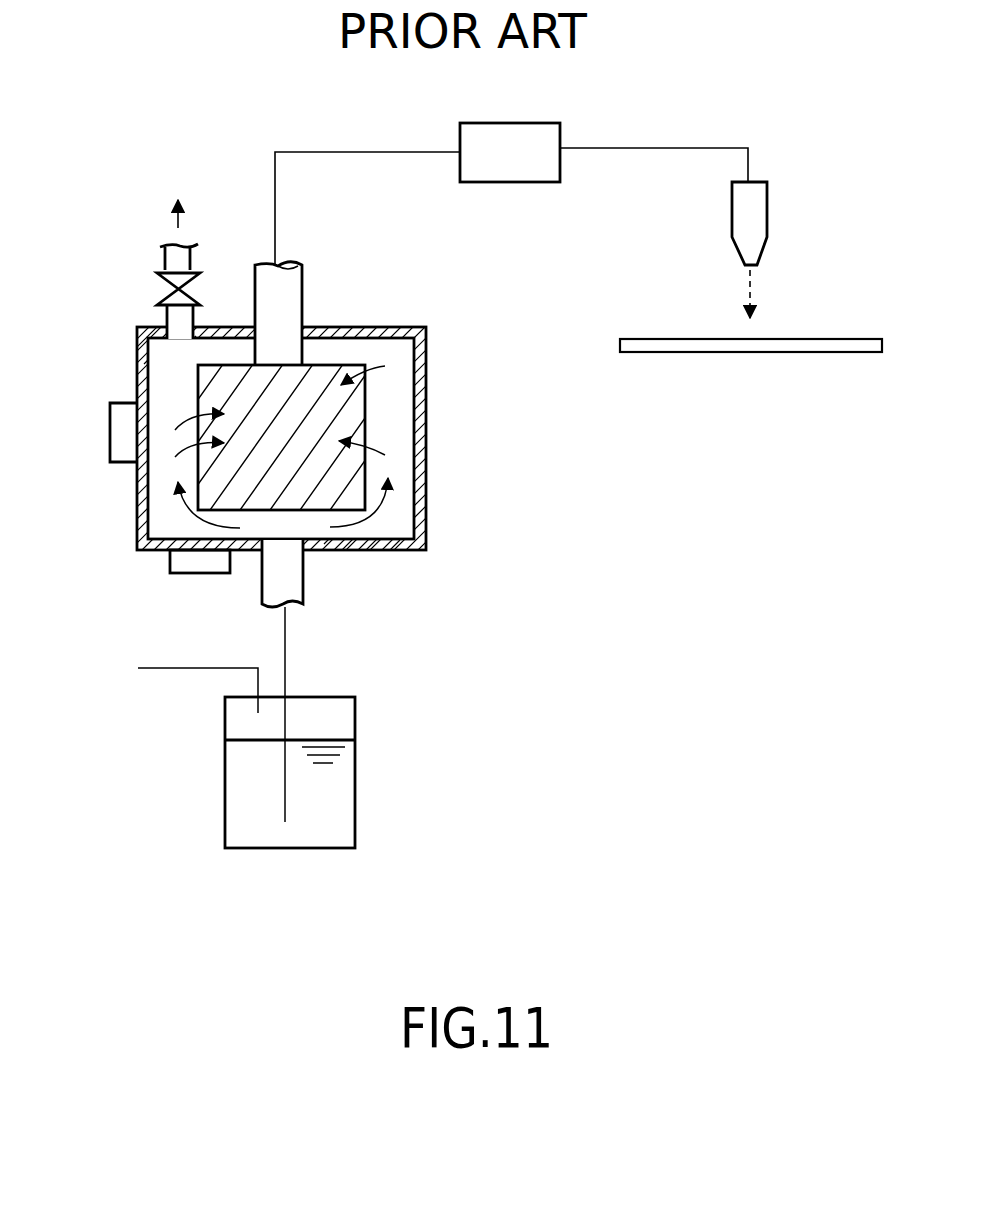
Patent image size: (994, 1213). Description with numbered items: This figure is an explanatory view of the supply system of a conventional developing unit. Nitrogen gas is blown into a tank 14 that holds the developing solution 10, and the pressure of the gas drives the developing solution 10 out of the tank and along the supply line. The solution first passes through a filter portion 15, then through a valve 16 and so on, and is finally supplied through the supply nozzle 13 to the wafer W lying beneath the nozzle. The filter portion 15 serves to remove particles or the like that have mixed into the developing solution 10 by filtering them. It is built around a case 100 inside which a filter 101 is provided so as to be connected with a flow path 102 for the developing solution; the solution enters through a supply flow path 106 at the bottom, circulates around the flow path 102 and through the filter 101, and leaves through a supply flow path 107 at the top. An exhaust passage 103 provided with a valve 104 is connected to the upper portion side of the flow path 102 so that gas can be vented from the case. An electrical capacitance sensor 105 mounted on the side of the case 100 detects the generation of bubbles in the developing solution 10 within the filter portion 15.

The case 100 is at (137, 367).
The filter 101 is at (350, 410).
The flow path 102 is at (397, 503).
The exhaust passage 103 is at (173, 253).
The valve 104 is at (167, 292).
The electrical capacitance sensor 105 is at (110, 430).
The supply flow path 106 is at (293, 572).
The supply flow path 107 is at (290, 297).
The filter portion 15 is at (425, 440).
The valve 16 is at (522, 177).
The supply nozzle 13 is at (762, 212).
The wafer W is at (845, 337).
The tank 14 is at (340, 805).
The developing solution 10 is at (240, 780).